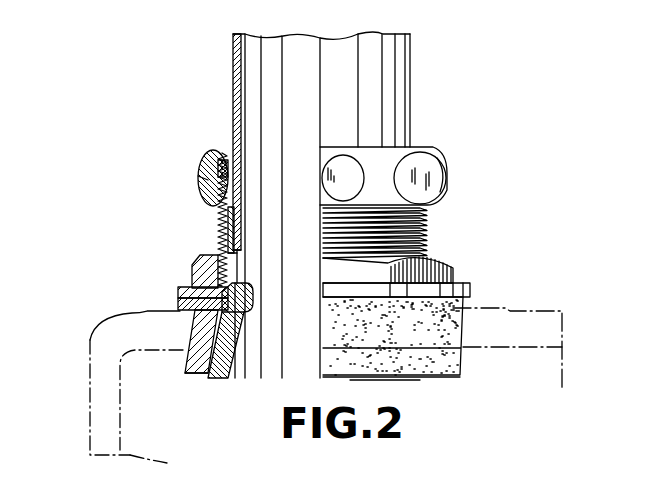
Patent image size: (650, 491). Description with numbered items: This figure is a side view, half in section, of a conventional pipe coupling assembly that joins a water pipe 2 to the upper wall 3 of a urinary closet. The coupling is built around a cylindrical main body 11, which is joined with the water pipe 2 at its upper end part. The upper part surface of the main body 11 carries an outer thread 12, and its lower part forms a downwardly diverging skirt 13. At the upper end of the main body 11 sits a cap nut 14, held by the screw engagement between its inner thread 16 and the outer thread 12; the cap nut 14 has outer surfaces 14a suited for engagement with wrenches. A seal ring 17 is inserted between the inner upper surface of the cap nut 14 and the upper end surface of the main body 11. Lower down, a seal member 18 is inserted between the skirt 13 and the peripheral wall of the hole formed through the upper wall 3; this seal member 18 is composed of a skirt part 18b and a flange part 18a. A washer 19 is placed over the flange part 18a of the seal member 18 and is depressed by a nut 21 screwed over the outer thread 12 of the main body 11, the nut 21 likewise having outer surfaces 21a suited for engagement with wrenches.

The water pipe 2 is at (233, 78).
The upper wall 3 is at (98, 392).
The cylindrical main body 11 is at (224, 232).
The outer thread 12 is at (218, 215).
The skirt 13 is at (232, 380).
The cap nut 14 is at (210, 160).
The outer surfaces 14a is at (438, 176).
The inner thread 16 is at (205, 178).
The seal ring 17 is at (224, 160).
The seal member 18 is at (190, 340).
The flange part 18a is at (180, 302).
The skirt part 18b is at (193, 375).
The washer 19 is at (188, 287).
The nut 21 is at (200, 263).
The outer surfaces 21a is at (445, 265).